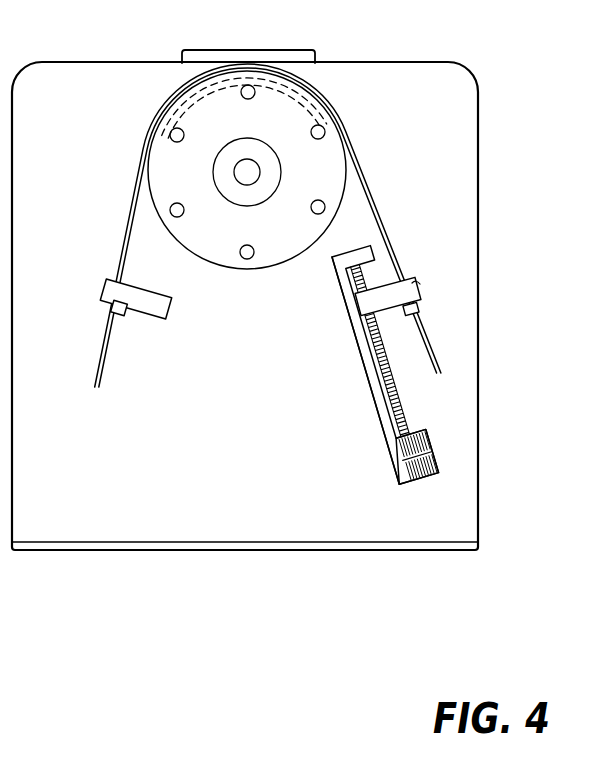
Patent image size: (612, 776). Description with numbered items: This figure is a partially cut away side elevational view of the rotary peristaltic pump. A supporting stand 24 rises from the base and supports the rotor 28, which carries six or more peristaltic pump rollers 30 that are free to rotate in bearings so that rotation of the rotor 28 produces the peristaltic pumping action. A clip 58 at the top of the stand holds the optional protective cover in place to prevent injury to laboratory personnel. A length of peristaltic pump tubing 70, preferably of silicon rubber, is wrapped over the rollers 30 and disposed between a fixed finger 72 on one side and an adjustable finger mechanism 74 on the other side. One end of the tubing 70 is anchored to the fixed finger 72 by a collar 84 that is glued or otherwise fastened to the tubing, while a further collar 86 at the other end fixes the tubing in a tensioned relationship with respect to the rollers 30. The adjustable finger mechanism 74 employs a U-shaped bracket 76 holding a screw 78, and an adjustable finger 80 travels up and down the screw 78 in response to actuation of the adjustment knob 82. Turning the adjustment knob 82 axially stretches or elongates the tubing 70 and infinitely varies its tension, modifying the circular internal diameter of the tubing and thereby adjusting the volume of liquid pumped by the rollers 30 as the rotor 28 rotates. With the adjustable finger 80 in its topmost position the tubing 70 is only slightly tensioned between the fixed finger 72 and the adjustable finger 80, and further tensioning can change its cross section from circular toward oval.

The supporting stand 24 is at (478, 127).
The rotor 28 is at (245, 178).
The peristaltic pump rollers 30 is at (248, 99).
The clip 58 is at (280, 50).
The peristaltic pump tubing 70 is at (373, 200).
The fixed finger 72 is at (166, 305).
The adjustable finger mechanism 74 is at (357, 347).
The U-shaped bracket 76 is at (378, 422).
The screw 78 is at (400, 387).
The adjustable finger 80 is at (415, 282).
The adjustment knob 82 is at (420, 478).
The collar 84 is at (121, 314).
The collar 86 is at (419, 311).